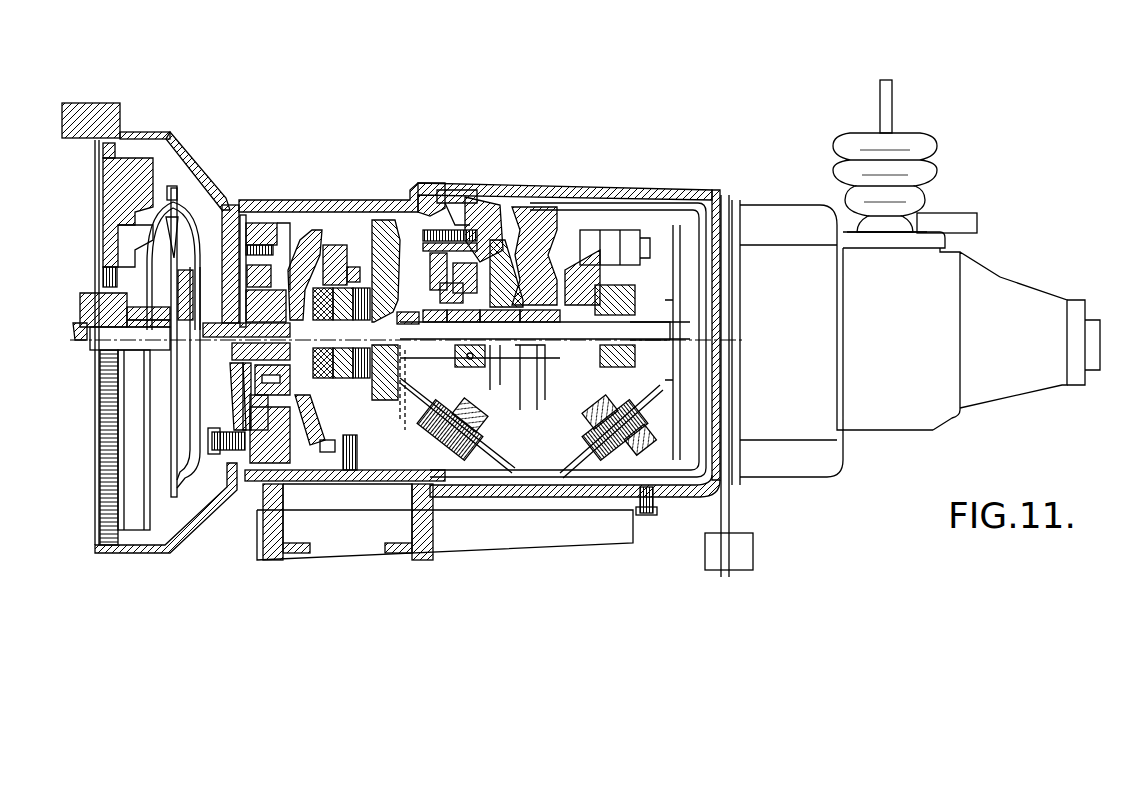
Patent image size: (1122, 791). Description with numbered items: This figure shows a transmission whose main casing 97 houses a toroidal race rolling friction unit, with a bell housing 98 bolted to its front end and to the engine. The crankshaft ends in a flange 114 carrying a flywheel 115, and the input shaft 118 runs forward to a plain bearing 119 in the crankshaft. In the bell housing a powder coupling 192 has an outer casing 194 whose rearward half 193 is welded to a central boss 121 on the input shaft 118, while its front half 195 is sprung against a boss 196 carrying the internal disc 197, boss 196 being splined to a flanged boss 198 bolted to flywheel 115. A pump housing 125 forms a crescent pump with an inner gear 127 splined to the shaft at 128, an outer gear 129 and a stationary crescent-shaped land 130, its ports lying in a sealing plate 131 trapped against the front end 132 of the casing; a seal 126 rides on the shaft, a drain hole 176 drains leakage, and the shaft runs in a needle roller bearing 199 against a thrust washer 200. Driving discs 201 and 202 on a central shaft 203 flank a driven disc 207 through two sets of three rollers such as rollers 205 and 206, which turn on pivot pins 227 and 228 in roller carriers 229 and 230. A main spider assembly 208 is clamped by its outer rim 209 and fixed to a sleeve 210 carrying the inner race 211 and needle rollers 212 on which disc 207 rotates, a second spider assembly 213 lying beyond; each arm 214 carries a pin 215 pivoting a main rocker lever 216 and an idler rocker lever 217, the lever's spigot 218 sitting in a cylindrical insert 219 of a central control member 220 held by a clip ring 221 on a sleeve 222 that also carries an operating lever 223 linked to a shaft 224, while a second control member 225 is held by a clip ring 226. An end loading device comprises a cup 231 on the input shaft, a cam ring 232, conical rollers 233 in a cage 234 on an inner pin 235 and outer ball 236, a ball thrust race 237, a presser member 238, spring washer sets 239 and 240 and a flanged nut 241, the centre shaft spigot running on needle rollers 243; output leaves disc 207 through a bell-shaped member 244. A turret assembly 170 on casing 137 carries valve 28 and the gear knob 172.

The valve 28 is at (968, 215).
The main casing 97 is at (415, 185).
The bell housing 98 is at (165, 548).
The flange 114 is at (82, 300).
The flywheel 115 is at (103, 172).
The input shaft 118 is at (100, 357).
The plain bearing 119 is at (80, 328).
The central boss 121 is at (150, 345).
The pump housing 125 is at (222, 235).
The seal 126 is at (214, 326).
The inner gear 127 is at (270, 380).
The splines 128 is at (243, 385).
The outer gear 129 is at (243, 215).
The crescent-shaped land 130 is at (262, 243).
The sealing plate 131 is at (250, 412).
The front end 132 is at (212, 440).
The casing 137 is at (786, 478).
The turret assembly 170 is at (935, 158).
The knob 172 is at (893, 95).
The drain hole 176 is at (230, 372).
The powder coupling 192 is at (190, 160).
The rearward half 193 is at (200, 270).
The outer casing 194 is at (171, 195).
The front half 195 is at (147, 238).
The boss 196 is at (168, 319).
The internal disc 197 is at (166, 222).
The flanged boss 198 is at (103, 275).
The needle roller bearing 199 is at (263, 276).
The thrust washer 200 is at (270, 435).
The driving disc 201 is at (380, 220).
The driving disc 202 is at (673, 280).
The central shaft 203 is at (545, 339).
The roller 205 is at (485, 440).
The roller 206 is at (580, 440).
The driven disc 207 is at (520, 207).
The main spider assembly 208 is at (462, 190).
The outer rim 209 is at (440, 183).
The sleeve 210 is at (500, 350).
The inner race 211 is at (540, 324).
The needle rollers 212 is at (578, 275).
The second spider assembly 213 is at (585, 232).
The arm 214 is at (488, 229).
The pin 215 is at (426, 246).
The main rocker lever 216 is at (430, 270).
The idler rocker lever 217 is at (433, 231).
The spigot 218 is at (440, 292).
The cylindrical insert 219 is at (470, 278).
The central control member 220 is at (466, 338).
The clip ring 221 is at (513, 273).
The sleeve 222 is at (438, 324).
The operating lever 223 is at (412, 325).
The shaft 224 is at (445, 522).
The second control member 225 is at (628, 300).
The clip ring 226 is at (650, 330).
The pivot pin 227 is at (450, 452).
The pivot pin 228 is at (632, 448).
The roller carrier 229 is at (457, 428).
The roller carrier 230 is at (610, 445).
The cup 231 is at (314, 236).
The cam ring 232 is at (338, 245).
The conical roller 233 is at (320, 446).
The cage 234 is at (352, 267).
The inner pin 235 is at (405, 378).
The outer ball 236 is at (343, 455).
The ball thrust race 237 is at (273, 252).
The presser member 238 is at (308, 425).
The set of spring washers 239 is at (367, 333).
The second set of spring washers 240 is at (342, 333).
The flanged nut 241 is at (318, 333).
The needle rollers 243 is at (238, 362).
The hollow bell-shaped member 244 is at (652, 203).